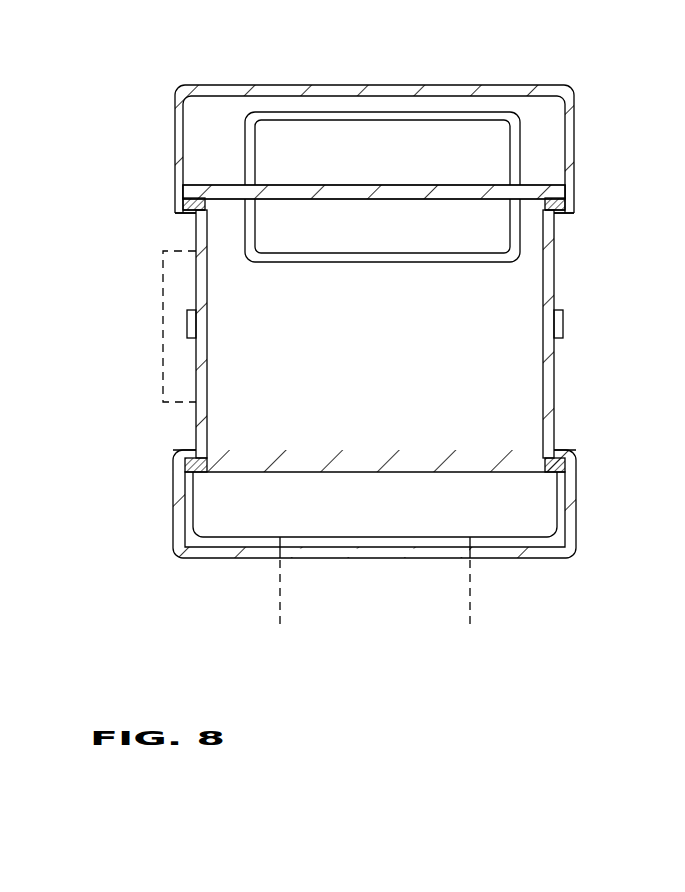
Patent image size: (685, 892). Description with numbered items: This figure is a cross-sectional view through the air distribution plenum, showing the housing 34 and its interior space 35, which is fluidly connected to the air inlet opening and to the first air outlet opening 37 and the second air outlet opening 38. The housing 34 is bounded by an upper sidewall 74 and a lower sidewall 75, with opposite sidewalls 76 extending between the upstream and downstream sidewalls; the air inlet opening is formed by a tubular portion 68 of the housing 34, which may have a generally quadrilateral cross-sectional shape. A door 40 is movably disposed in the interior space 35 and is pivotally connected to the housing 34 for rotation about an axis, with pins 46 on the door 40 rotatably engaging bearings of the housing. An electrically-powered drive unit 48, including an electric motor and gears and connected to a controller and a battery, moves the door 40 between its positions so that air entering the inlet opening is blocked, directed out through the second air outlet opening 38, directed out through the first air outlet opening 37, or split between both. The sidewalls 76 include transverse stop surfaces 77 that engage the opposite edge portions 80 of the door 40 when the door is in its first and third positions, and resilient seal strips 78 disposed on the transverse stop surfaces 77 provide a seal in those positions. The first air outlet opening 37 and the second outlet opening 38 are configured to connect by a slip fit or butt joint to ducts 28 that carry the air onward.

The ducts 28 is at (470, 587).
The housing 34 is at (471, 82).
The interior space 35 is at (384, 335).
The first air outlet opening 37 is at (375, 540).
The second air outlet opening 38 is at (326, 165).
The door 40 is at (300, 201).
The pins 46 is at (188, 330).
The electrically-powered drive unit 48 is at (160, 307).
The tubular portion 68 is at (368, 108).
The upper sidewall 74 is at (415, 87).
The lower sidewall 75 is at (270, 560).
The opposite sidewalls 76 is at (196, 258).
The transverse stop surfaces 77 is at (188, 212).
The resilient seal strips 78 is at (190, 199).
The opposite edge portions 80 is at (186, 206).